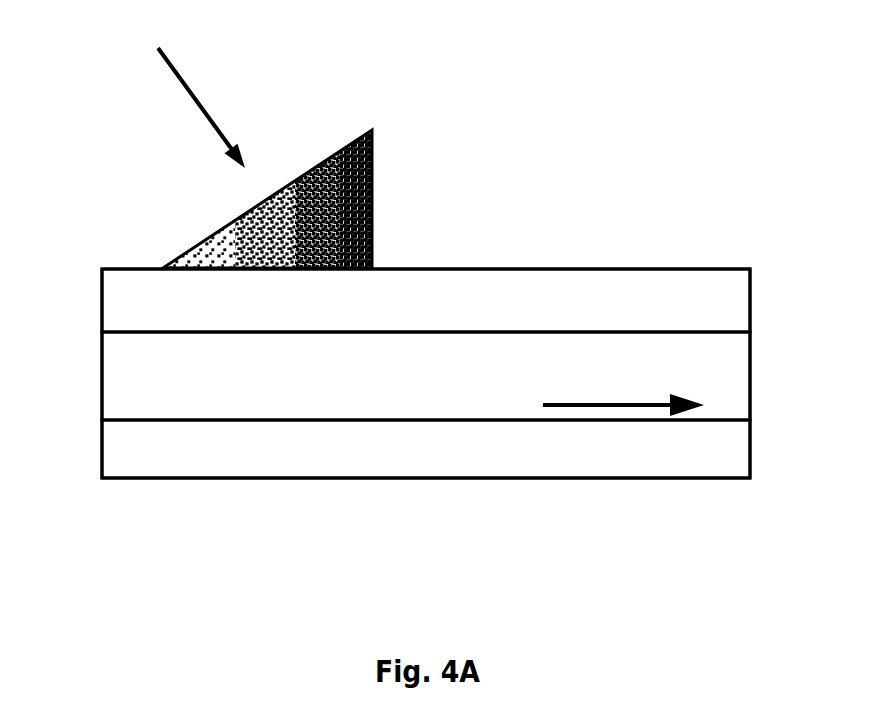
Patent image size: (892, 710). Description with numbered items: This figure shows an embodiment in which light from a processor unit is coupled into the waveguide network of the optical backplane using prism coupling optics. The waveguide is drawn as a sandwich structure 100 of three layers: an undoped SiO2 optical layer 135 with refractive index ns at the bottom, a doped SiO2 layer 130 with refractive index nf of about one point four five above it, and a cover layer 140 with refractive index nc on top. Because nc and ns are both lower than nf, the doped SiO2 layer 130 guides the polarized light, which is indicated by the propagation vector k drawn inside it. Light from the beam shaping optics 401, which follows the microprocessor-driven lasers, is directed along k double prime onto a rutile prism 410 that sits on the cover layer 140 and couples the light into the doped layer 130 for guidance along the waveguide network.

The optical waveguide device 100 is at (652, 413).
The cover layer 140 is at (673, 267).
The doped SiO2 layer 130 is at (227, 383).
The undoped SiO2 optical layer 135 is at (143, 487).
The prism 410 is at (392, 152).
The beam shaping optics 401 is at (182, 108).